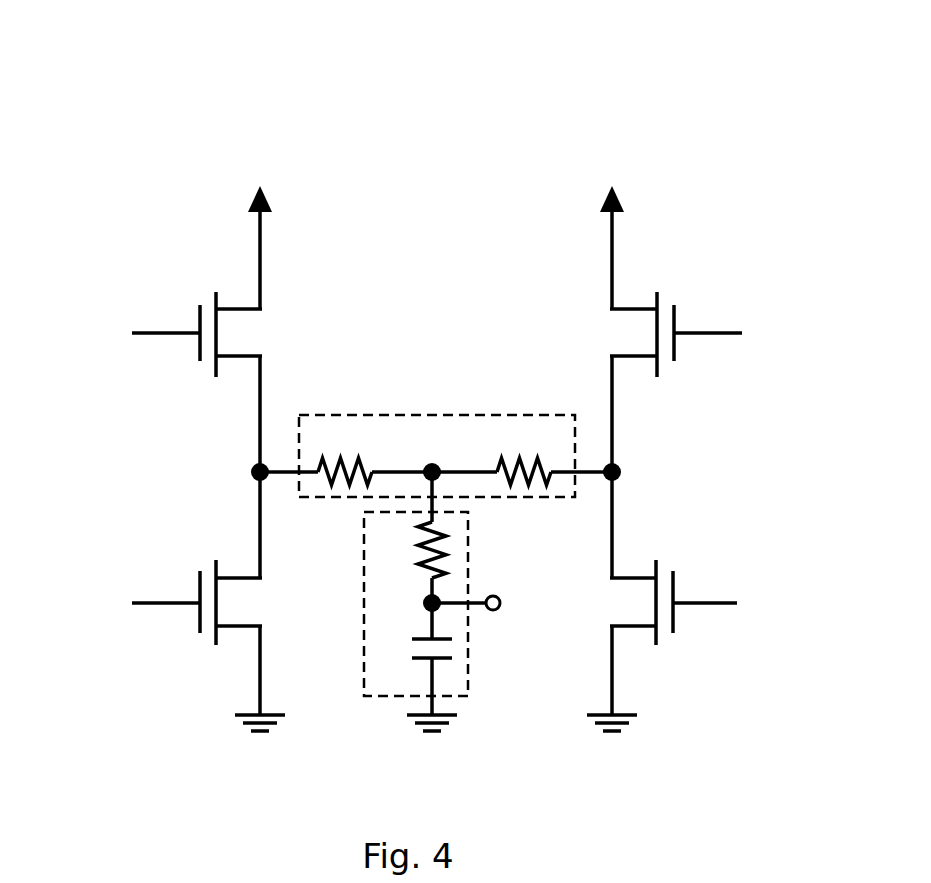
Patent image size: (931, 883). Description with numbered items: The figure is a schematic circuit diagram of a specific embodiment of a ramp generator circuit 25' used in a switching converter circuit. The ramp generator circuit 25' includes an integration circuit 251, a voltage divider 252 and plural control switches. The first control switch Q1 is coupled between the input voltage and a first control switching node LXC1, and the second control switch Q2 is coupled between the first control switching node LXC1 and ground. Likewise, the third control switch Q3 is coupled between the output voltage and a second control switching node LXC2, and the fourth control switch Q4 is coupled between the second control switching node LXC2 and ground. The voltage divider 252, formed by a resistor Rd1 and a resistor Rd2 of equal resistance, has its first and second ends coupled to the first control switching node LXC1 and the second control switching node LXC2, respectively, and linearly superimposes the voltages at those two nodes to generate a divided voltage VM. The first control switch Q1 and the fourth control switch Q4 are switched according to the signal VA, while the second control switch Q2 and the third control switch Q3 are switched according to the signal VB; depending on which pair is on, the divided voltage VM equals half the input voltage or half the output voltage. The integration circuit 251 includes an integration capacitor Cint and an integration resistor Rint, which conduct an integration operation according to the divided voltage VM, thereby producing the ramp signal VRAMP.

The ramp generator circuit 25' is at (435, 370).
The integration circuit 251 is at (363, 573).
The voltage divider 252 is at (418, 414).
The first control switch Q1 is at (219, 334).
The second control switch Q2 is at (214, 602).
The third control switch Q3 is at (659, 334).
The fourth control switch Q4 is at (657, 602).
The resistor Rd1 is at (348, 456).
The resistor Rd2 is at (528, 456).
The integration resistor Rint is at (410, 550).
The integration capacitor Cint is at (409, 648).
The first control switching node LXC1 is at (254, 467).
The second control switching node LXC2 is at (620, 478).
The divided voltage VM is at (430, 458).
The ramp signal VRAMP is at (488, 589).